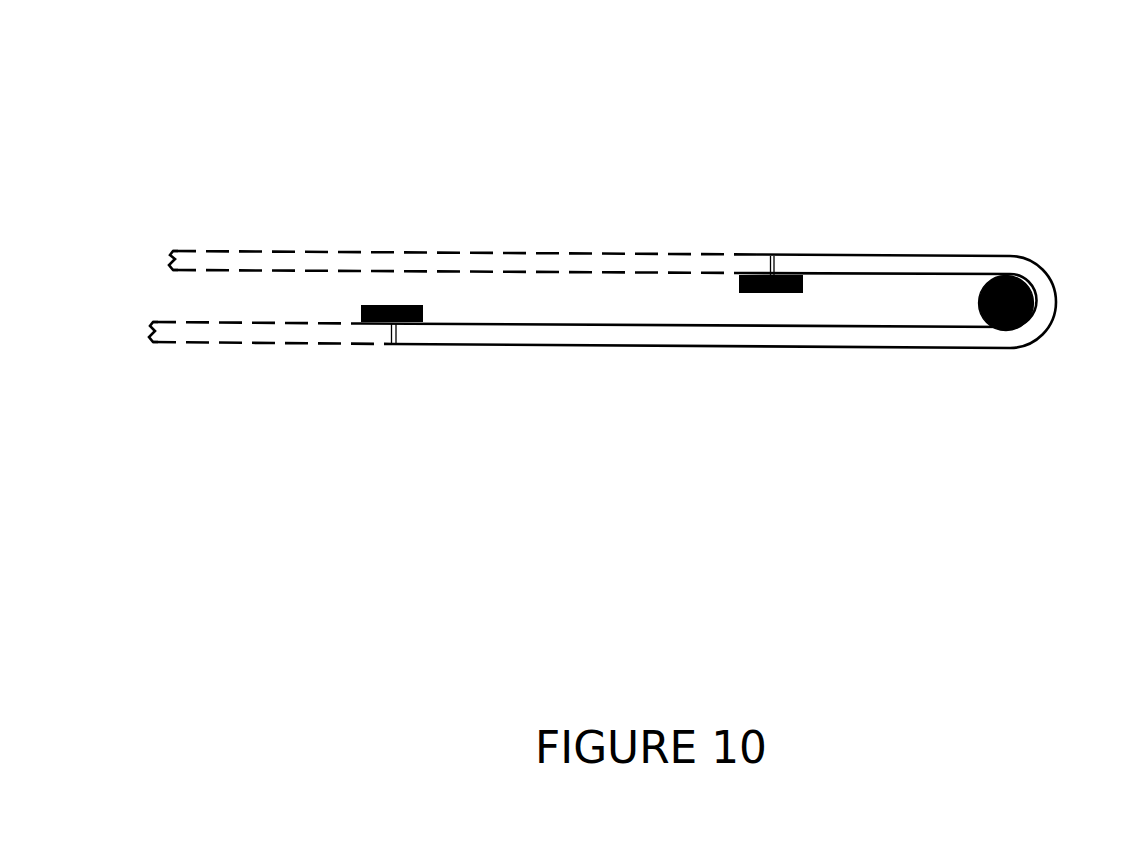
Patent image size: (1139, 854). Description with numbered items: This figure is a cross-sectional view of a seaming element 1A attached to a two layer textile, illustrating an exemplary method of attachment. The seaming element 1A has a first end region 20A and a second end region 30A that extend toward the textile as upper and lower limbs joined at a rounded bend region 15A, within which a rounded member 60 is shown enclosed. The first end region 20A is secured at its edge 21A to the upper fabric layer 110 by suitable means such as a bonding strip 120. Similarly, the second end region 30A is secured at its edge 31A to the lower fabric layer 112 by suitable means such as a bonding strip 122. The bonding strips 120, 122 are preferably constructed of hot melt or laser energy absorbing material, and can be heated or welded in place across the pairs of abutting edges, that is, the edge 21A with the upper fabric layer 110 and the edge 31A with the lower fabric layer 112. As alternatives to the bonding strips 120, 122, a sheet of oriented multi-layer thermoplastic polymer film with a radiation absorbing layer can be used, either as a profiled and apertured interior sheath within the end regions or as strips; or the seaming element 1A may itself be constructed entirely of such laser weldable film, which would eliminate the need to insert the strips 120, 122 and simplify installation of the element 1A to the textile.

The seaming element 1A is at (375, 78).
The upper fabric layer 110 is at (210, 251).
The lower fabric layer 112 is at (225, 343).
The bonding strip 120 is at (740, 277).
The bonding strip 122 is at (362, 309).
The edge 21A is at (772, 256).
The edge 31A is at (393, 343).
The first end region 20A is at (897, 235).
The second end region 30A is at (658, 363).
The bend region 15A is at (1055, 297).
The spacer 60 is at (1018, 328).